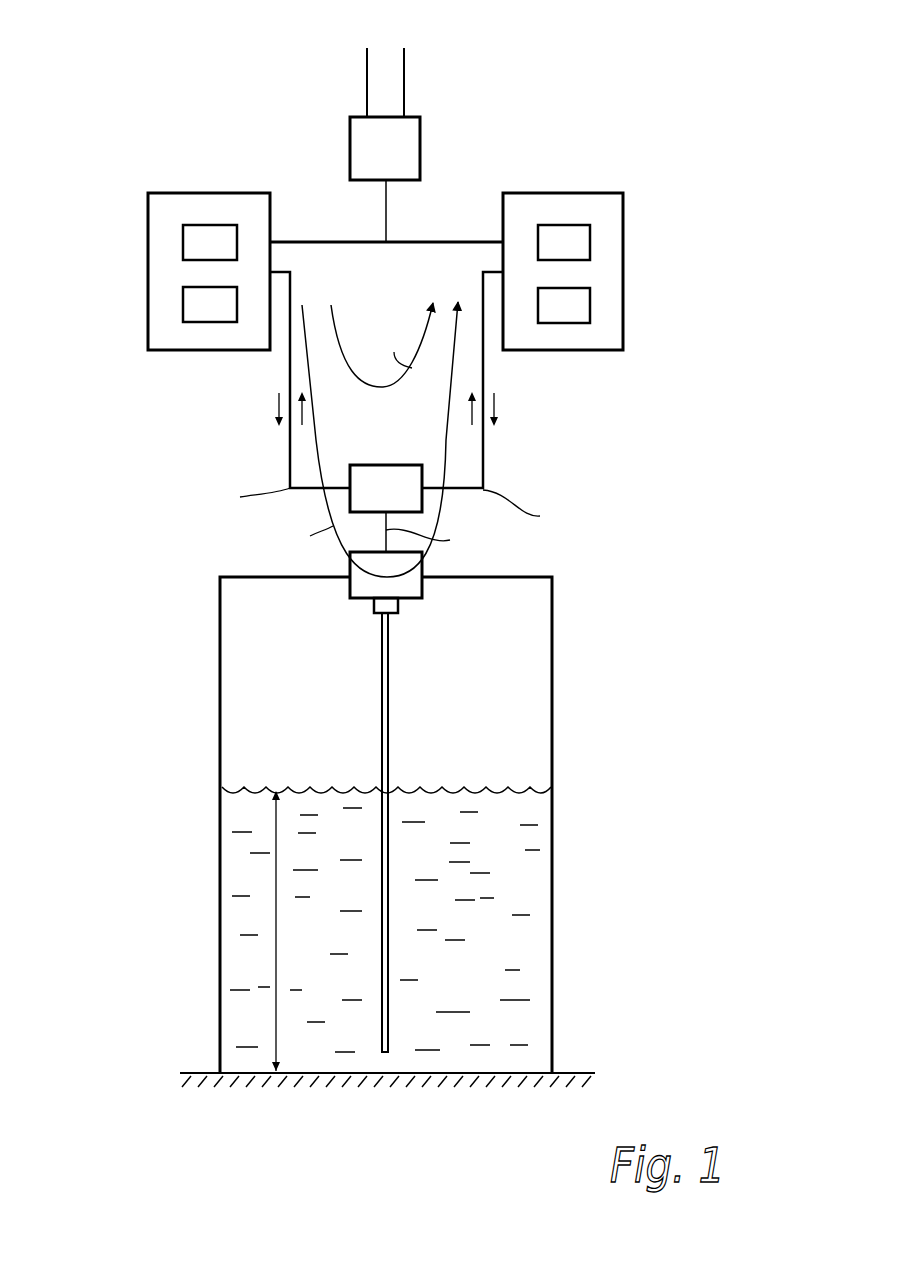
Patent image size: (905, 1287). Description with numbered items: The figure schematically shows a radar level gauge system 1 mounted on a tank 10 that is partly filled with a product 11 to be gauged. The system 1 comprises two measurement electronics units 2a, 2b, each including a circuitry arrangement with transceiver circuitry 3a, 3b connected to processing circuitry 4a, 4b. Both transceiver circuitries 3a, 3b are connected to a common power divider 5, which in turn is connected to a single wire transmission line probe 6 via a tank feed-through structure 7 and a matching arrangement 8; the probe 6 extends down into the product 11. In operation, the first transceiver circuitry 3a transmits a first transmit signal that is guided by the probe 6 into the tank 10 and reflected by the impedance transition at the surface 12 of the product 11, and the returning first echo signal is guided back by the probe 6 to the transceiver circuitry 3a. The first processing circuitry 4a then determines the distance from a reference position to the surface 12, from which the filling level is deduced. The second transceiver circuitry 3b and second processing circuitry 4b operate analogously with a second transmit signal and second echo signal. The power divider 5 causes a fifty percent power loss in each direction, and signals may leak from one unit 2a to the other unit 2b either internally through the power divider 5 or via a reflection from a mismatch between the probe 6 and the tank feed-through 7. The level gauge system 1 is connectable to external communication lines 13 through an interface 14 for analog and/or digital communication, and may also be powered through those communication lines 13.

The radar level gauge system 1 is at (700, 60).
The first measurement electronics unit 2a is at (226, 193).
The second measurement electronics unit 2b is at (553, 193).
The first transceiver circuitry 3a is at (183, 247).
The second transceiver circuitry 3b is at (590, 245).
The first processing circuitry 4a is at (183, 308).
The second processing circuitry 4b is at (590, 308).
The power divider 5 is at (422, 472).
The single wire transmission line probe 6 is at (388, 665).
The tank feed-through structure 7 is at (422, 590).
The matching arrangement 8 is at (374, 608).
The tank 10 is at (552, 838).
The product 11 is at (482, 970).
The surface 12 is at (513, 792).
The external communication lines 13 is at (367, 75).
The interface 14 is at (422, 125).